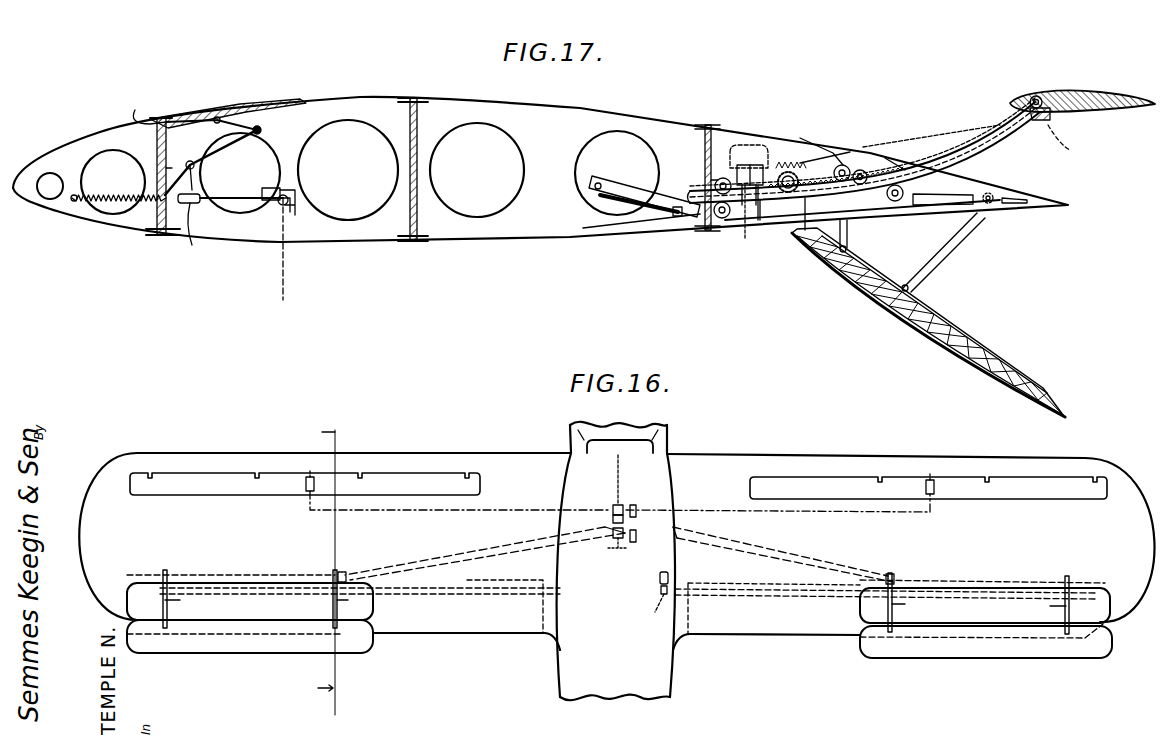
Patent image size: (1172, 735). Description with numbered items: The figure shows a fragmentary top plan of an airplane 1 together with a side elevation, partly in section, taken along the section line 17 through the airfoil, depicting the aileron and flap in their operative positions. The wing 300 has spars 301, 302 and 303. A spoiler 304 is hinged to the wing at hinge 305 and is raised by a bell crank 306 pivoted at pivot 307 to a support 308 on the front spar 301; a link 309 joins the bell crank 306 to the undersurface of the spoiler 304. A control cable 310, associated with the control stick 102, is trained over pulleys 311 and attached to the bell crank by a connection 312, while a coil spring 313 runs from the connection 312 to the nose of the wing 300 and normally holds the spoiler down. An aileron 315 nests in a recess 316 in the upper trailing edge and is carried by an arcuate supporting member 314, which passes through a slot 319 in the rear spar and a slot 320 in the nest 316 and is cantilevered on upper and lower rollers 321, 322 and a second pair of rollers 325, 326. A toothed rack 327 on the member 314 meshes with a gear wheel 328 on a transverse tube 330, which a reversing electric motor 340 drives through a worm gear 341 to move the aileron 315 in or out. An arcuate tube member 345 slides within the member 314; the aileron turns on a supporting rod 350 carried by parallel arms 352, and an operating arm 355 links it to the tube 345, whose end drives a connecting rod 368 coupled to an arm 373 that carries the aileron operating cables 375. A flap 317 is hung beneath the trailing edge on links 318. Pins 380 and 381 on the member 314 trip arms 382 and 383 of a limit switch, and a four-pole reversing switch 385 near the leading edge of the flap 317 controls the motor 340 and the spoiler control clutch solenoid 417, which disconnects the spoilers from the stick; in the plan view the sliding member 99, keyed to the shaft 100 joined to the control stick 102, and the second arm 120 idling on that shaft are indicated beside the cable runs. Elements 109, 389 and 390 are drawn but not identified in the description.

In FIG. 16, the airplane 1 is at (655, 672).
In FIG. 16, the section line 17- 17 is at (312, 570).
In FIG. 16, the sliding member 99 is at (613, 530).
In FIG. 16, the shaft 100 is at (613, 505).
In FIG. 16, the control stick 102 is at (616, 458).
In FIG. 16, the pulley 109 is at (613, 515).
In FIG. 16, the second arm 120 is at (612, 545).
In FIG. 17, the wing 300 is at (495, 101).
In FIG. 16, the wing 300 is at (430, 445).
In FIG. 17, the front spar 301 is at (134, 108).
In FIG. 17, the spar 302 is at (400, 104).
In FIG. 17, the spar 303 is at (700, 132).
In FIG. 17, the spoiler 304 is at (215, 118).
In FIG. 16, the spoiler 304 is at (205, 480).
In FIG. 17, the hinge 305 is at (180, 122).
In FIG. 17, the bell crank 306 is at (218, 147).
In FIG. 16, the bell crank 306 is at (313, 473).
In FIG. 17, the pivot 307 is at (194, 168).
In FIG. 17, the support 308 is at (172, 166).
In FIG. 17, the link 309 is at (262, 128).
In FIG. 17, the control cable 310 is at (245, 200).
In FIG. 16, the control cable 310 is at (418, 508).
In FIG. 17, the pulleys 311 is at (290, 212).
In FIG. 17, the connection 312 is at (192, 240).
In FIG. 17, the coil spring 313 is at (120, 203).
In FIG. 17, the arcuate supporting member 314 is at (1000, 150).
In FIG. 16, the arcuate supporting member 314 is at (615, 607).
In FIG. 17, the aileron 315 is at (1100, 94).
In FIG. 16, the aileron 315 is at (272, 648).
In FIG. 17, the recess 316 is at (864, 172).
In FIG. 16, the recess 316 is at (245, 582).
In FIG. 17, the flap 317 is at (880, 302).
In FIG. 16, the flap 317 is at (506, 577).
In FIG. 17, the links 318 is at (920, 262).
In FIG. 17, the slot 319 is at (685, 222).
In FIG. 17, the slot 320 is at (896, 168).
In FIG. 17, the upper roller 321 is at (714, 182).
In FIG. 17, the lower roller 322 is at (722, 219).
In FIG. 17, the roller 325 is at (862, 170).
In FIG. 17, the roller 326 is at (898, 201).
In FIG. 17, the toothed rack 327 is at (955, 158).
In FIG. 17, the gear wheel 328 is at (840, 164).
In FIG. 16, the gear wheel 328 is at (168, 584).
In FIG. 17, the tube 330 is at (800, 222).
In FIG. 16, the tube 330 is at (608, 590).
In FIG. 16, the electric motor 340 is at (660, 576).
In FIG. 17, the worm gear 341 is at (800, 160).
In FIG. 16, the worm gear 341 is at (656, 607).
In FIG. 17, the arcuate tube member 345 is at (614, 180).
In FIG. 17, the supporting rod 350 is at (1038, 96).
In FIG. 17, the parallel arms 352 is at (1052, 118).
In FIG. 17, the operating arm 355 is at (1072, 143).
In FIG. 17, the connecting rod 368 is at (604, 192).
In FIG. 17, the arm 373 is at (650, 212).
In FIG. 16, the arm 373 is at (358, 572).
In FIG. 16, the aileron operating cables 375 is at (500, 545).
In FIG. 17, the pin 380 is at (745, 242).
In FIG. 17, the pin 381 is at (968, 190).
In FIG. 17, the limit switch arm 382 is at (715, 178).
In FIG. 17, the limit switch arm 383 is at (789, 170).
In FIG. 17, the four-pole reversing switch 385 is at (758, 222).
In FIG. 17, the housing 389 is at (742, 143).
In FIG. 17, the motor 390 is at (760, 160).
In FIG. 16, the spoiler control clutch solenoid 417 is at (634, 506).